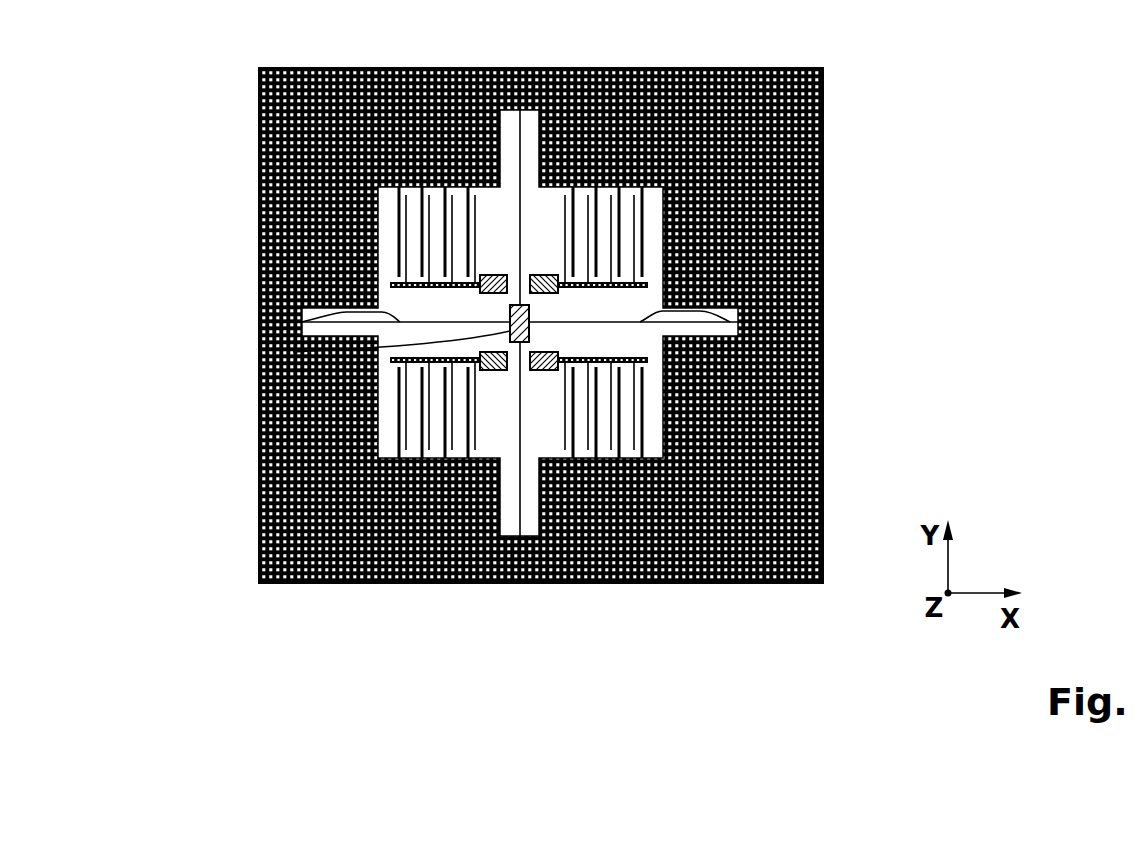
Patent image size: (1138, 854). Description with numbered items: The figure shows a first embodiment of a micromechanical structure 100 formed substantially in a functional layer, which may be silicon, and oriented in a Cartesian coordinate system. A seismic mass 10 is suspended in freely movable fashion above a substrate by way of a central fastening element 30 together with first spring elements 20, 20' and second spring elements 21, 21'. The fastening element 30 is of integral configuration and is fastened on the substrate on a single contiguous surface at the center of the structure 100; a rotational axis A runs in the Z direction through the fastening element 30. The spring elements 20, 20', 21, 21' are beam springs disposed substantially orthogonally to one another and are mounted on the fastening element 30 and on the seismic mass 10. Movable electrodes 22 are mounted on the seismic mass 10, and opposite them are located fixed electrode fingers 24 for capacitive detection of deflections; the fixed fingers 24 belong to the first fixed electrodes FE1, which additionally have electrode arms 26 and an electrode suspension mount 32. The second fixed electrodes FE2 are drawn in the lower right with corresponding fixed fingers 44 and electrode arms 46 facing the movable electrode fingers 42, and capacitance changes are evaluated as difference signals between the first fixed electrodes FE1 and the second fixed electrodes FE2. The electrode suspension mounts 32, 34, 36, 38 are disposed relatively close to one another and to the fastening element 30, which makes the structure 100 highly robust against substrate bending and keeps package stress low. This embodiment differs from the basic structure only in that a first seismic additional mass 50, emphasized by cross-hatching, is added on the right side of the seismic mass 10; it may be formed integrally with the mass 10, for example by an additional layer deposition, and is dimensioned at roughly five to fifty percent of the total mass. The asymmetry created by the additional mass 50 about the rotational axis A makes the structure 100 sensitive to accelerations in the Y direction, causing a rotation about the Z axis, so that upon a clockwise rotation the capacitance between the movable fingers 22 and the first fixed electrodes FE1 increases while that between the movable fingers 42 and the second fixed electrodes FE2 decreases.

The micromechanical structure 100 is at (270, 640).
The seismic mass 10 is at (823, 90).
The first spring element 20 is at (535, 177).
The first spring element 20' is at (540, 474).
The second spring element 21 is at (360, 315).
The second spring element 21' is at (699, 313).
The rotational axis A is at (293, 352).
The fastening element 30 is at (530, 315).
The electrode suspension mount 32 is at (545, 273).
The electrode suspension mount 34 is at (545, 372).
The electrode suspension mount 36 is at (495, 372).
The electrode suspension mount 38 is at (495, 273).
The movable electrodes 22 is at (641, 202).
The fixed electrode fingers 24 is at (636, 227).
The electrode arms 26 is at (647, 278).
The movable electrode fingers 42 is at (637, 403).
The stator comb fingers 44 is at (637, 428).
The comb electrode bar 46 is at (648, 365).
The first fixed electrodes FE1 is at (753, 230).
The second fixed electrodes FE2 is at (753, 400).
The first seismic additional mass 50 is at (823, 590).